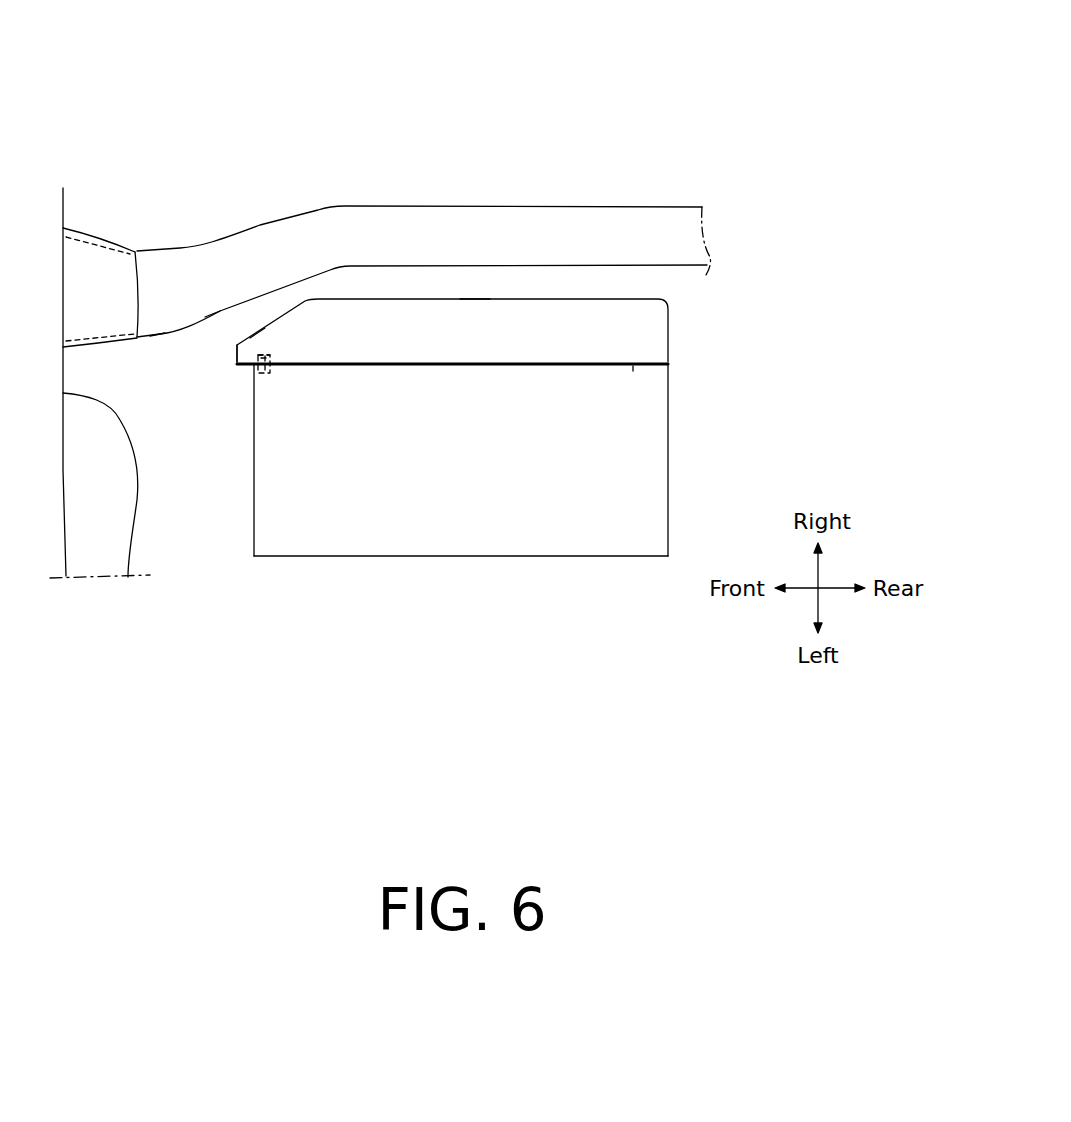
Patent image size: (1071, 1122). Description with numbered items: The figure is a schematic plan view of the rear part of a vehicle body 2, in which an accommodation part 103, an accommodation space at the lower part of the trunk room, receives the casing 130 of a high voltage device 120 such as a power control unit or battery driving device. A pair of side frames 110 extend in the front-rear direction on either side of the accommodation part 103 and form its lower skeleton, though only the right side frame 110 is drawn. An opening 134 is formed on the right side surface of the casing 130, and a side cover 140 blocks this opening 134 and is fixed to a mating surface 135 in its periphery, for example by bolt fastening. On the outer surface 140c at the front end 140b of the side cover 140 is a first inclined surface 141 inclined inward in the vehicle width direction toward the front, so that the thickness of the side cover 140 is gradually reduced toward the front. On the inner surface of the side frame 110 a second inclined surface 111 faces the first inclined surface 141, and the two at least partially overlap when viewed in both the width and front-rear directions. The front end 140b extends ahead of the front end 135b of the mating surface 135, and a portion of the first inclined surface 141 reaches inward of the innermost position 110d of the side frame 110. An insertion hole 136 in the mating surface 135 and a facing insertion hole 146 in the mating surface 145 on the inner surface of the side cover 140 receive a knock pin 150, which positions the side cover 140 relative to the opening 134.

The vehicle body 2 is at (382, 129).
The accommodation part 103 is at (413, 283).
The side frame 110 is at (640, 221).
The innermost position of side frame 110d is at (158, 336).
The second inclined surface 111 is at (212, 320).
The high voltage device 120 is at (304, 562).
The casing 130 is at (668, 443).
The opening 134 is at (532, 364).
The mating surface 135 is at (653, 363).
The front end of mating surface 135b is at (258, 367).
The insertion hole 136 is at (270, 372).
The side cover 140 is at (658, 330).
The front end of side cover 140b is at (237, 360).
The outer surface of side cover 140c is at (475, 300).
The first inclined surface 141 is at (257, 333).
The mating surface of side cover 145 is at (633, 366).
The insertion hole of side cover 146 is at (268, 357).
The knock pin 150 is at (270, 367).